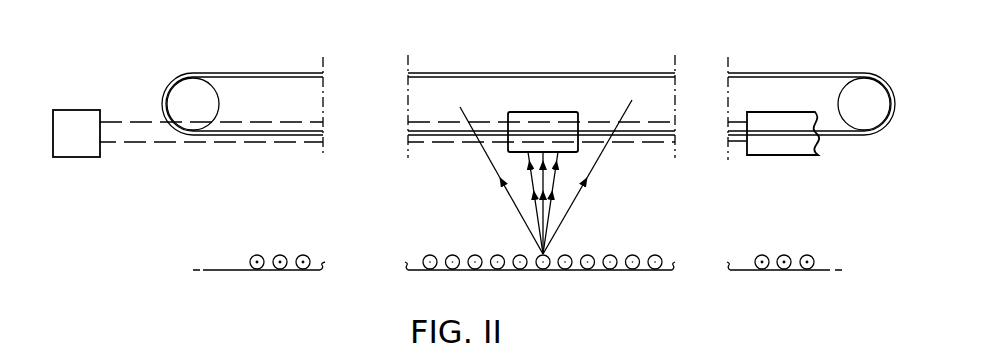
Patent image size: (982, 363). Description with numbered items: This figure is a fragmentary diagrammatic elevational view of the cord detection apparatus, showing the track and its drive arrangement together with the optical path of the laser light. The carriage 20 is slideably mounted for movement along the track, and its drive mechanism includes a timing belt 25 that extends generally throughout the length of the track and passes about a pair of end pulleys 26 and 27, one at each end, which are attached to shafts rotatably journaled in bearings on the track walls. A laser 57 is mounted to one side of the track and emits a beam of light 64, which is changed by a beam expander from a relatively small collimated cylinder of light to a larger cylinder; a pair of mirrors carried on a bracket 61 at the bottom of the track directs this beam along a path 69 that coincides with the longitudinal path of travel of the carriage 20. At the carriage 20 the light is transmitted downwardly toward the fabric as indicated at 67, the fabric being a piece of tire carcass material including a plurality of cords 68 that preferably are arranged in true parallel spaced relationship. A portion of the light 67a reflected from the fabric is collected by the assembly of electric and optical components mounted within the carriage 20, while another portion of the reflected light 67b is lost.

The carriage 20 is at (556, 111).
The timing belt 25 is at (450, 73).
The end pulley 26 is at (187, 93).
The end pulley 27 is at (870, 97).
The laser 57 is at (778, 160).
The bracket 61 is at (80, 137).
The beam of light 64 is at (146, 145).
The downwardly transmitted light beam 67 is at (546, 208).
The reflected light portion 67a is at (555, 183).
The lost reflected light portion 67b is at (485, 154).
The cords 68 is at (452, 255).
The path 69 is at (297, 122).